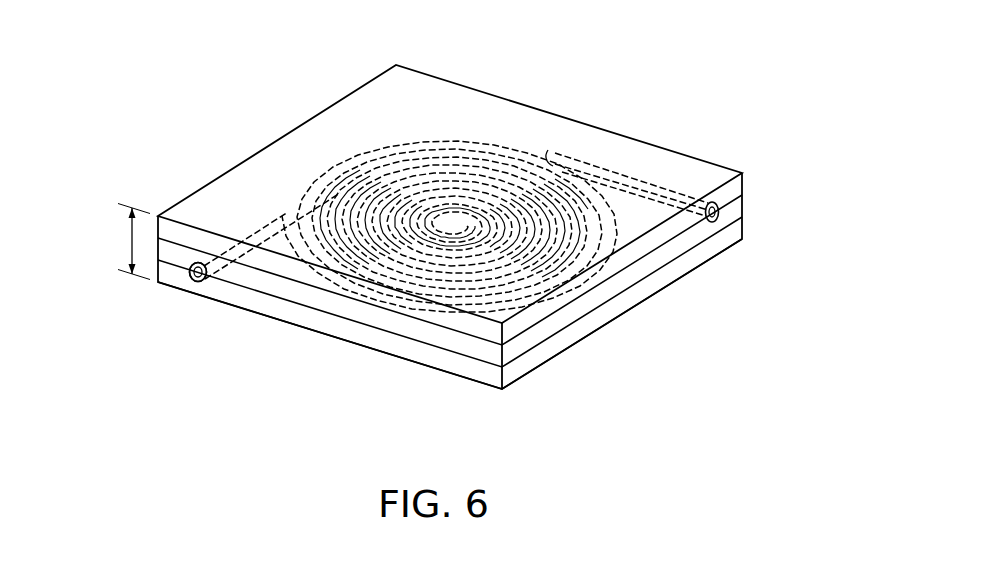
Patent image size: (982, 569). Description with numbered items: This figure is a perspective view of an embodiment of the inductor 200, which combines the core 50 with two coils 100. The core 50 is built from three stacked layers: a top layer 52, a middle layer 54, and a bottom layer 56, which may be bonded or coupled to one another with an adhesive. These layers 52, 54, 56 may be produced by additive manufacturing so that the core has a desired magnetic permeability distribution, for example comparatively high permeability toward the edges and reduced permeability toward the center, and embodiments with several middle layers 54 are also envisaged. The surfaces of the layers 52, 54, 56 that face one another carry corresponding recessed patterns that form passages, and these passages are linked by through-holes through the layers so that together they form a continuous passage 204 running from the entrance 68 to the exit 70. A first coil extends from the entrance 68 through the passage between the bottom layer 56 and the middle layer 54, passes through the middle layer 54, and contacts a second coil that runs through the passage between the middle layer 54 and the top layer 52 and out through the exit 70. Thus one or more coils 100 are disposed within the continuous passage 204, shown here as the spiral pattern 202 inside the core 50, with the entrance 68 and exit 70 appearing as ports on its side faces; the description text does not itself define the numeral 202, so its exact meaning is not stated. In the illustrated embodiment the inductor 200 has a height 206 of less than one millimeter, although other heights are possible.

The inductor 200 is at (208, 54).
The spiral fluid channel 202 is at (510, 198).
The continuous passage 204 is at (188, 273).
The height 206 is at (128, 240).
The coil 100 is at (188, 285).
The entrance 68 is at (196, 285).
The exit 70 is at (723, 224).
The core 50 is at (677, 305).
The top layer 52 is at (743, 183).
The middle layer 54 is at (743, 207).
The bottom layer 56 is at (743, 228).